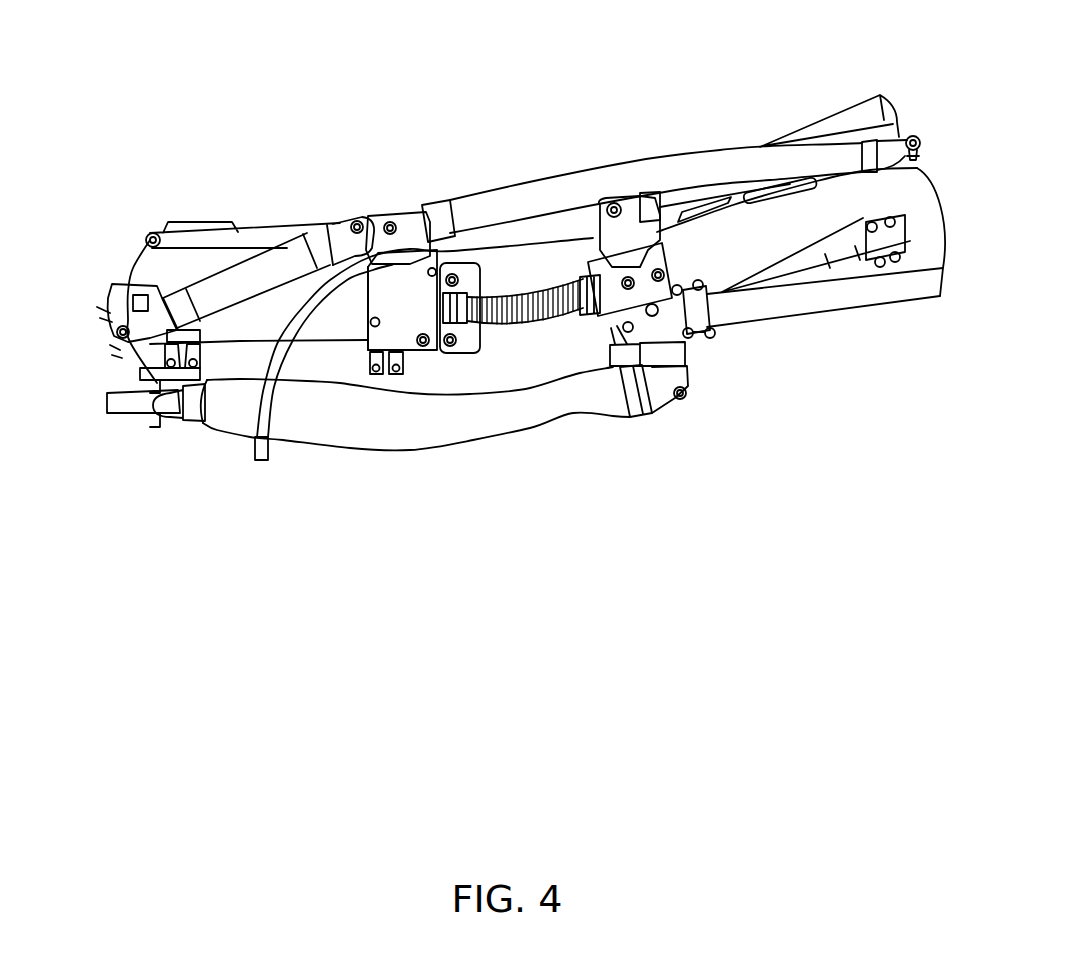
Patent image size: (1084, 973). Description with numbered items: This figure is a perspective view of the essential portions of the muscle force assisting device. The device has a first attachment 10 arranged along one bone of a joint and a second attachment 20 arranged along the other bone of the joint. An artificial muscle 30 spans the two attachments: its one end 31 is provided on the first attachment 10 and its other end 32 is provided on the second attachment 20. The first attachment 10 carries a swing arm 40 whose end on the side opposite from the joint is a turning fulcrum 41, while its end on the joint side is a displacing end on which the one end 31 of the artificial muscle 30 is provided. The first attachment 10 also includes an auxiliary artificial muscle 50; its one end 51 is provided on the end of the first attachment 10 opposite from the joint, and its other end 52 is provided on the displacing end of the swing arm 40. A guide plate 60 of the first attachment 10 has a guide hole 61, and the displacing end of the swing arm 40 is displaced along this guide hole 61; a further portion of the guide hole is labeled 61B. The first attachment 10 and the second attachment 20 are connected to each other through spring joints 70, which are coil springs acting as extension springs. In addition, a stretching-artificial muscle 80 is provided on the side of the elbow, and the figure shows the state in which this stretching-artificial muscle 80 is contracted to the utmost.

The first attachment 10 is at (263, 320).
The second attachment 20 is at (768, 243).
The artificial muscle 30 is at (697, 167).
The one end of the artificial muscle 31 is at (393, 215).
The other end of the artificial muscle 32 is at (905, 140).
The swing arm 40 is at (202, 238).
The turning fulcrum 41 is at (147, 230).
The auxiliary artificial muscle 50 is at (257, 270).
The one end of the auxiliary artificial muscle 51 is at (113, 297).
The other end of the auxiliary artificial muscle 52 is at (357, 217).
The guide plate 60 is at (402, 340).
The guide hole 61 is at (373, 312).
The bracket flange 61B is at (367, 350).
The spring joints 70 is at (530, 332).
The stretching-artificial muscle 80 is at (478, 432).